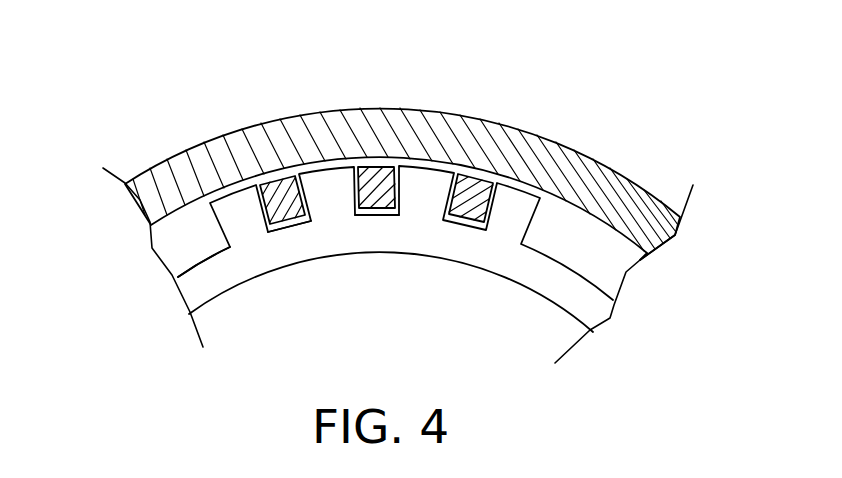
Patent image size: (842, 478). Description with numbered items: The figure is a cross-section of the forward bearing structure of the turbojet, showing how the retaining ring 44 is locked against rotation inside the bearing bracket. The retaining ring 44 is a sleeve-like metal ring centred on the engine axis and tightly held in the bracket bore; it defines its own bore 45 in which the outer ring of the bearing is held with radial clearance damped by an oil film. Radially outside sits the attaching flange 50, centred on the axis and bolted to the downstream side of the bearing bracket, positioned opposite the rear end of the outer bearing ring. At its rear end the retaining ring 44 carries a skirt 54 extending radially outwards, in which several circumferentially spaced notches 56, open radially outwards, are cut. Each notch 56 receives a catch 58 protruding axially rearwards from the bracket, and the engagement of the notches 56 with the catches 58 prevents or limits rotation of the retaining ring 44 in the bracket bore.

The retaining ring 44 is at (313, 255).
The bore 45 is at (398, 253).
The attaching flange 50 is at (598, 181).
The skirt 54 is at (197, 284).
The notches 56 is at (366, 213).
The catches 58 is at (275, 190).